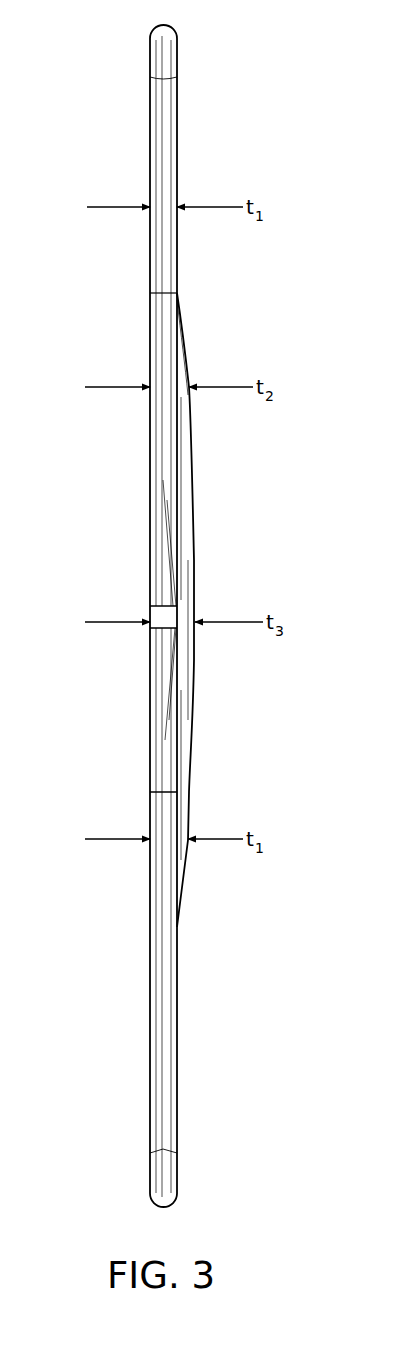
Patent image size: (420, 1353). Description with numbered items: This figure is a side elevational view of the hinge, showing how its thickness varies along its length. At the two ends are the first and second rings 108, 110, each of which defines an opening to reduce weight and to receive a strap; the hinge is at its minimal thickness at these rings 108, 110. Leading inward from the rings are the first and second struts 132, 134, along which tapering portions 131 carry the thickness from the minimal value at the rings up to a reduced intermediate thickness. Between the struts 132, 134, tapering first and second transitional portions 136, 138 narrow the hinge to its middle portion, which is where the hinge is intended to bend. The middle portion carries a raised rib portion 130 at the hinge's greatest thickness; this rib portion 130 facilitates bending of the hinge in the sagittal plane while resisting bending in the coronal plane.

The first ring 108 is at (161, 118).
The second ring 110 is at (162, 1098).
The rib portion 130 is at (198, 548).
The tapering portions 131 is at (183, 357).
The first strut 132 is at (188, 480).
The second strut 134 is at (188, 785).
The first transitional portion 136 is at (160, 512).
The second transitional portion 138 is at (170, 688).